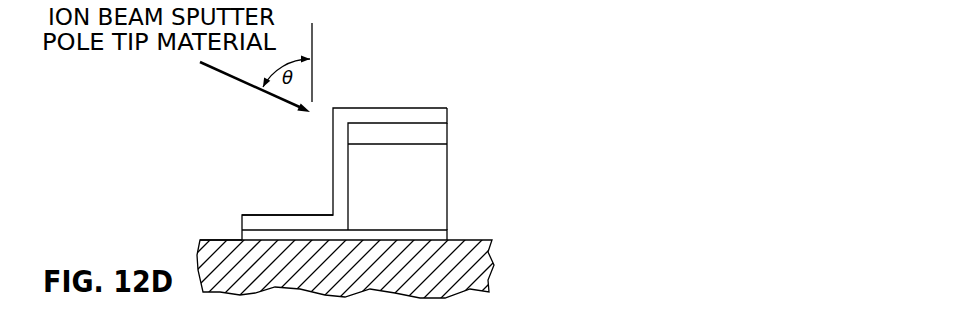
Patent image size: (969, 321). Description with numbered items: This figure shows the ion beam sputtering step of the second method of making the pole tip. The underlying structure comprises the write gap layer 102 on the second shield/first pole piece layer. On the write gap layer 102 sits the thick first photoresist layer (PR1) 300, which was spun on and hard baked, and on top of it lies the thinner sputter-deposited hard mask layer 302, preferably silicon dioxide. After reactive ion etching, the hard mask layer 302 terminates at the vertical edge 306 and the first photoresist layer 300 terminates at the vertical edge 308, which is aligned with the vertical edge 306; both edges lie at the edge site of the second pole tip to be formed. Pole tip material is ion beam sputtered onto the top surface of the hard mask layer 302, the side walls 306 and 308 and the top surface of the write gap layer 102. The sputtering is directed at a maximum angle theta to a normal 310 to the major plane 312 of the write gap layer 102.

The normal 310 is at (312, 33).
The vertical edge 306 is at (348, 131).
The hard mask layer 302 is at (440, 136).
The first photoresist layer 300 is at (440, 173).
The first photoresist layer PR1 is at (399, 192).
The vertical edge 308 is at (348, 191).
The write gap layer 102 is at (422, 230).
The major plane 312 is at (222, 240).